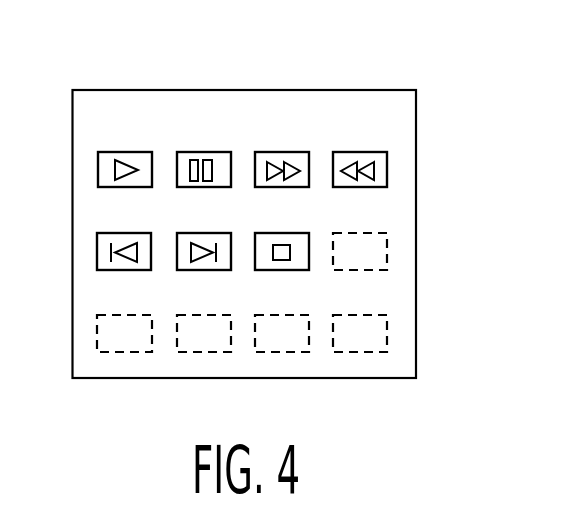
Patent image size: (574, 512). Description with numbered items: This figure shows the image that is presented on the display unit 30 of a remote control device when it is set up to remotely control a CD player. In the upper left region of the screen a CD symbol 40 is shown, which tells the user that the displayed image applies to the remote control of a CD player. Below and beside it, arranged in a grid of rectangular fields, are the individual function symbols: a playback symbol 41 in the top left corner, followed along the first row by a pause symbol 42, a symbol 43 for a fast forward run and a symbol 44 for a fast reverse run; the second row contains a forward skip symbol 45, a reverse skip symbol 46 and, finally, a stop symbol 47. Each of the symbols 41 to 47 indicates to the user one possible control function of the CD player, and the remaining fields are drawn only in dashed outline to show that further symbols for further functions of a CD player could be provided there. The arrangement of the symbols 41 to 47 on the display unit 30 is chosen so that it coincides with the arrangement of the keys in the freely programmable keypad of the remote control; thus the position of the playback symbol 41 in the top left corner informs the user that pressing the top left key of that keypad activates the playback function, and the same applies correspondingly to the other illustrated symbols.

The display unit 30 is at (412, 127).
The CD symbol 40 is at (95, 105).
The playback symbol 41 is at (138, 152).
The pause symbol 42 is at (207, 152).
The fast forward run symbol 43 is at (285, 152).
The fast reverse run symbol 44 is at (360, 152).
The forward skip symbol 45 is at (132, 233).
The reverse skip symbol 46 is at (215, 233).
The stop symbol 47 is at (300, 237).